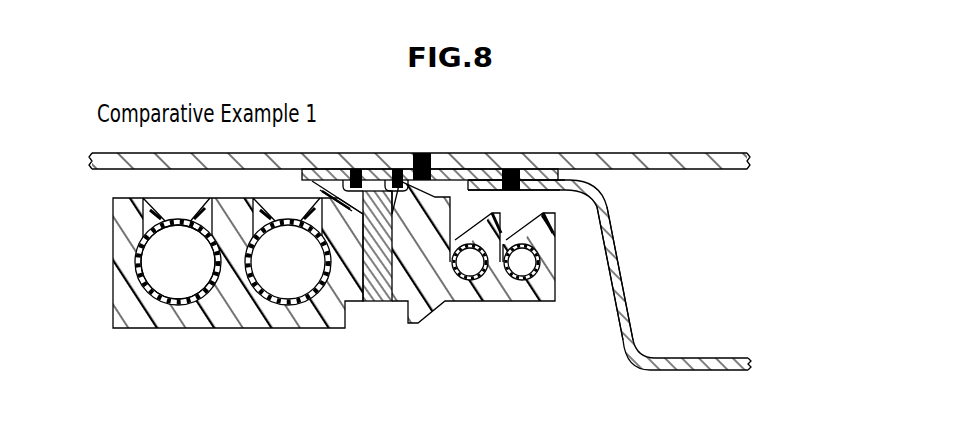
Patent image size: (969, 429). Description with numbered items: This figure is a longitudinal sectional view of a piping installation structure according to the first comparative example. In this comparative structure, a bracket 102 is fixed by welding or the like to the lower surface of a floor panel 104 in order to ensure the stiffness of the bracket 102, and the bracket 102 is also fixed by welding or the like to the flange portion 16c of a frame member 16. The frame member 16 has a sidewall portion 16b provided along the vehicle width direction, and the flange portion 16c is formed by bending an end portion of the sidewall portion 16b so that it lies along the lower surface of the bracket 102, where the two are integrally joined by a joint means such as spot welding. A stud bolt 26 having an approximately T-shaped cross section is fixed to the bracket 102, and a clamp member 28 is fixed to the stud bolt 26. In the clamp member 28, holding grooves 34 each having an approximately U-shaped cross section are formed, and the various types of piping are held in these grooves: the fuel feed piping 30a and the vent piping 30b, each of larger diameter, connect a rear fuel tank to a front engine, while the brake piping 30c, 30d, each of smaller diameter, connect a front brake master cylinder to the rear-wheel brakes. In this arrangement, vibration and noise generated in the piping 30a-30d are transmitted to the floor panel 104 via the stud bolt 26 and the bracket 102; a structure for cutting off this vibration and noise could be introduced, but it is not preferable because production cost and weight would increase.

The floor panel 104 is at (620, 153).
The bracket 102 is at (426, 152).
The clamp member 28 is at (110, 243).
The fuel feed piping 30a is at (147, 295).
The vent piping 30b is at (287, 305).
The brake piping 30c is at (470, 282).
The brake piping 30d is at (520, 282).
The holding groove 34 is at (186, 283).
The stud bolt 26 is at (374, 277).
The frame member 16 is at (624, 258).
The sidewall portion 16b is at (619, 283).
The flange portion 16c is at (535, 190).